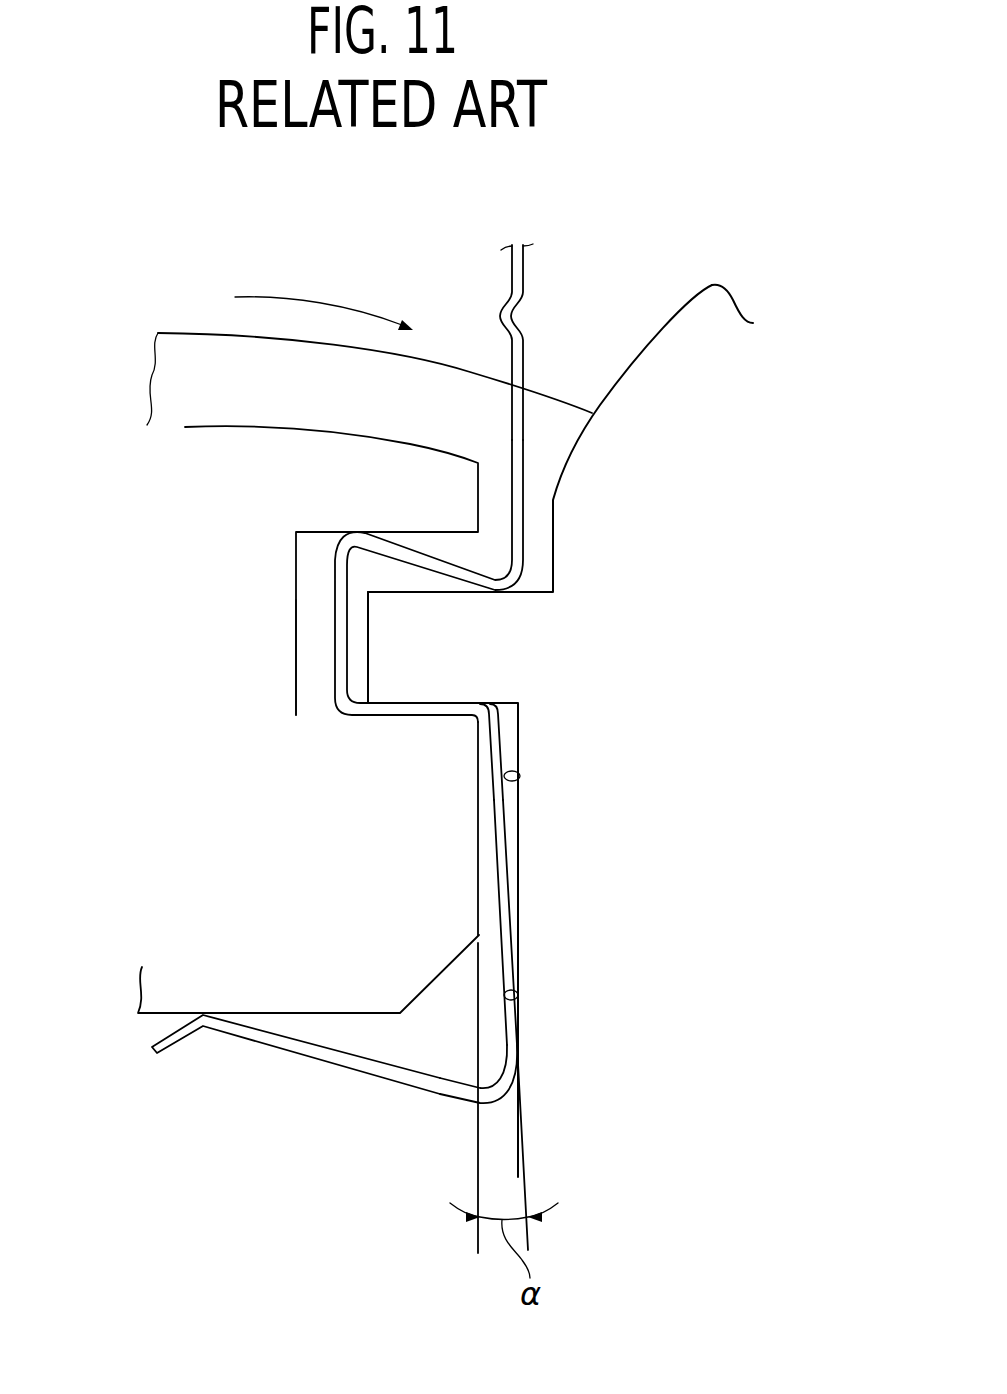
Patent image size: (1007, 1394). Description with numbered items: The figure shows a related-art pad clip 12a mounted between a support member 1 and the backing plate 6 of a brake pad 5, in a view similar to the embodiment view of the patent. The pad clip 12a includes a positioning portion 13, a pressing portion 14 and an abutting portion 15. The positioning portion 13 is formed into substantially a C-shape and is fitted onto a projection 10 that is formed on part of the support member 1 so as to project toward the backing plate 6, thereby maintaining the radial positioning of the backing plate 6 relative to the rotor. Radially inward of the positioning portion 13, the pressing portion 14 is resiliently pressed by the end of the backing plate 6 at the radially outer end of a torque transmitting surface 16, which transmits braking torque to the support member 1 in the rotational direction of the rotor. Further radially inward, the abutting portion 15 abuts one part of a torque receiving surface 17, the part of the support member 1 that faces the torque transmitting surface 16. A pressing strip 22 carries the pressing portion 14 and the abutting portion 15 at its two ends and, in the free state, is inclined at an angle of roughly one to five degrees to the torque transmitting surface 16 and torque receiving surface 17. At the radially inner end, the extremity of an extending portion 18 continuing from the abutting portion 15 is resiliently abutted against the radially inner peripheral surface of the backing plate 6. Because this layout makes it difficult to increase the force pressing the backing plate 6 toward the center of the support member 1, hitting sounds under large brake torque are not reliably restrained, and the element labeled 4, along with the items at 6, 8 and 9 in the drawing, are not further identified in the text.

The support member 1 is at (688, 469).
The body panel flange 4 is at (635, 650).
The pad 5 is at (170, 540).
The backing plate 6 is at (235, 760).
The door inner panel flange 8 is at (373, 870).
The seal lip 9 is at (518, 772).
The projection 10 is at (442, 648).
The pad clip 12a is at (585, 282).
The positioning portion 13 is at (340, 588).
The pressing portion 14 is at (500, 718).
The abutting portion 15 is at (512, 1073).
The torque transmitting surface 16 is at (480, 822).
The torque receiving surface 17 is at (518, 997).
The extending portion 18 is at (327, 1057).
The pressing strip 22 is at (507, 907).